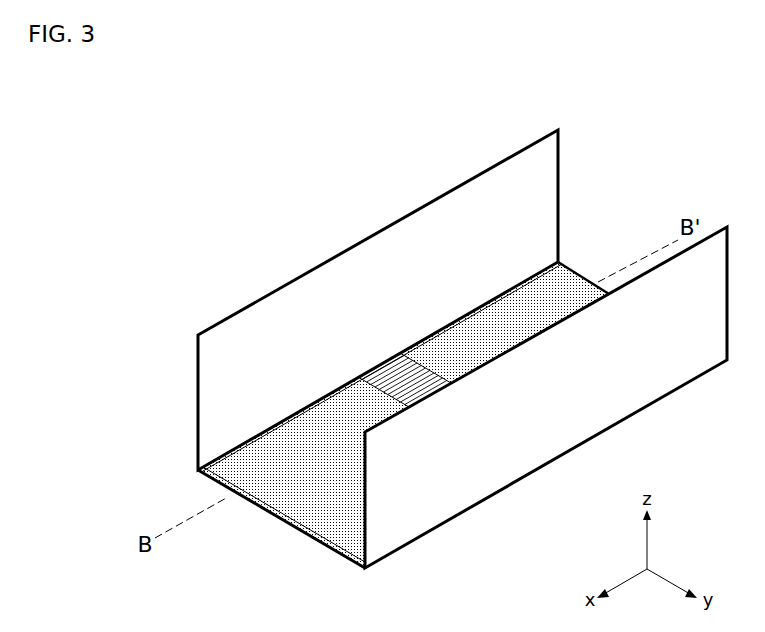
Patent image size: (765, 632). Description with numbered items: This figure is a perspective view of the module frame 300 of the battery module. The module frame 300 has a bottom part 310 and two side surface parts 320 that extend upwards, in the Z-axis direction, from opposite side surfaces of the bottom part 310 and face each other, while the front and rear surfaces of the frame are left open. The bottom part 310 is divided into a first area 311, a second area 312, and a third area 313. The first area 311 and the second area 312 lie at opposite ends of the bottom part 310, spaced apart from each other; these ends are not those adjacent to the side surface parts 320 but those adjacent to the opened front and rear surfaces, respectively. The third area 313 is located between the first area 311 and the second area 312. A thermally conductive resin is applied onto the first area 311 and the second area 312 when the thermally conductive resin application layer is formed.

The module frame 300 is at (92, 357).
The bottom part 310 is at (212, 482).
The first area 311 is at (340, 418).
The second area 312 is at (512, 325).
The third area 313 is at (400, 375).
The side surface parts 320 is at (373, 463).